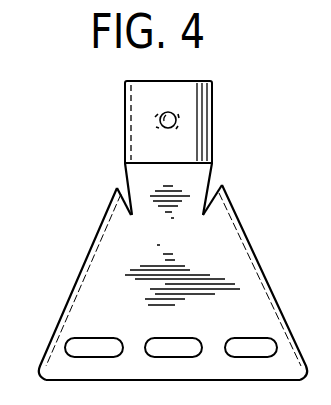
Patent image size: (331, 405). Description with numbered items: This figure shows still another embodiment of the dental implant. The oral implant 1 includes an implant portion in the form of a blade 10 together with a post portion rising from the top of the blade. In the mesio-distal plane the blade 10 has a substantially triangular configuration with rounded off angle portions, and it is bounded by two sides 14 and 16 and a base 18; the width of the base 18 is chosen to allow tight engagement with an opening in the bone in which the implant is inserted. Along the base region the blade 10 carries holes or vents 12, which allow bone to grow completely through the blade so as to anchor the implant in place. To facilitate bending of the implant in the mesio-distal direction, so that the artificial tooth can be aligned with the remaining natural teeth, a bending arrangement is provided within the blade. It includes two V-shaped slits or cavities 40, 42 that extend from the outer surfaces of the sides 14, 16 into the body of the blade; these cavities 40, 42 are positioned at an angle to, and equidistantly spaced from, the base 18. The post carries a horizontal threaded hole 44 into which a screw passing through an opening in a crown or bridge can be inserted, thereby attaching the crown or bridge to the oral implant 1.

The oral implant 1 is at (247, 145).
The blade 10 is at (210, 260).
The holes or vents 12 is at (148, 344).
The side 14 is at (283, 299).
The side 16 is at (64, 299).
The base 18 is at (243, 381).
The V-shaped slit or cavity 40 is at (223, 186).
The V-shaped slit or cavity 42 is at (119, 188).
The horizontal threaded hole 44 is at (160, 118).